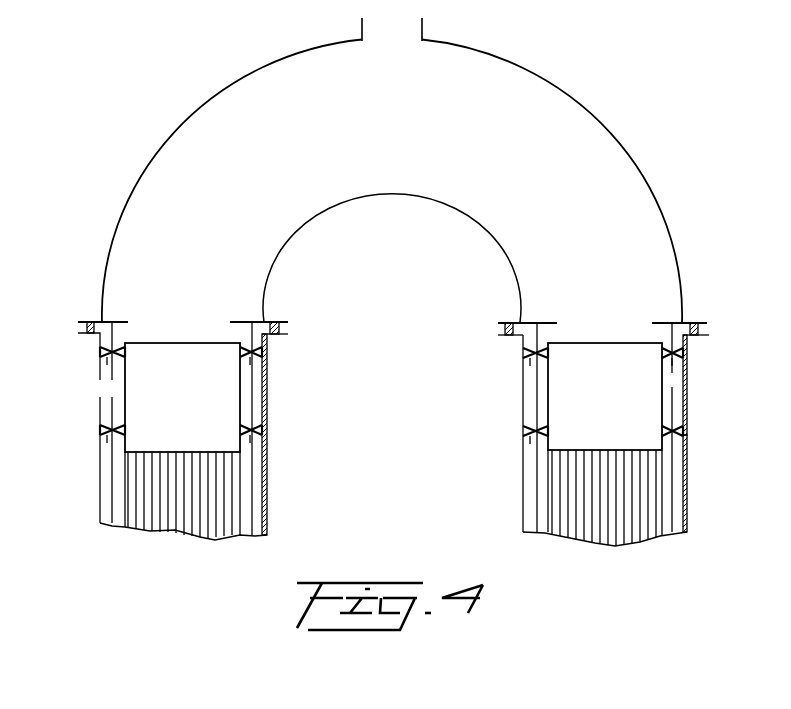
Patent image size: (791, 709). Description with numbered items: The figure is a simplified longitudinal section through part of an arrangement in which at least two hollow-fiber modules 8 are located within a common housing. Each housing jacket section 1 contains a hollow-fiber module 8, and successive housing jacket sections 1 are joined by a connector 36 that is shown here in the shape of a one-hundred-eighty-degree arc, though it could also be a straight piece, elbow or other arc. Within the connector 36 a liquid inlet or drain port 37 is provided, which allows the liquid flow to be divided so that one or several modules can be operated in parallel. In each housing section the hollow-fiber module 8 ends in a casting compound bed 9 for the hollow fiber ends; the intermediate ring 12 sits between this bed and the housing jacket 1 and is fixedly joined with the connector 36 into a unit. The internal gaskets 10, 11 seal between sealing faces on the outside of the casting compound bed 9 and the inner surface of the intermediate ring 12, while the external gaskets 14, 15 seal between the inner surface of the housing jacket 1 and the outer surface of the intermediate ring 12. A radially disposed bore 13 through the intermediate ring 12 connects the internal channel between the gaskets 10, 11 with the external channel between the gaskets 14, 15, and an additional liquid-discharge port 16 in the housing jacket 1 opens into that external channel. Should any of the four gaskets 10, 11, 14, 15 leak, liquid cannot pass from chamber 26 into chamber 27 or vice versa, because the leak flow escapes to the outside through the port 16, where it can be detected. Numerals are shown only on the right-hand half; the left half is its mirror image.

The housing jacket 1 is at (523, 503).
The hollow-fiber module 8 is at (612, 515).
The casting compound bed 9 is at (610, 404).
The internal gasket 10 is at (662, 353).
The internal gasket 11 is at (662, 431).
The intermediate ring 12 is at (537, 390).
The radially disposed bore 13 is at (670, 388).
The external gasket 14 is at (523, 353).
The external gasket 15 is at (523, 431).
The additional port for liquid discharge 16 is at (683, 388).
The chamber 26 is at (513, 148).
The chamber 27 is at (676, 503).
The connector 36 is at (493, 53).
The liquid inlet or drain port 37 is at (400, 35).